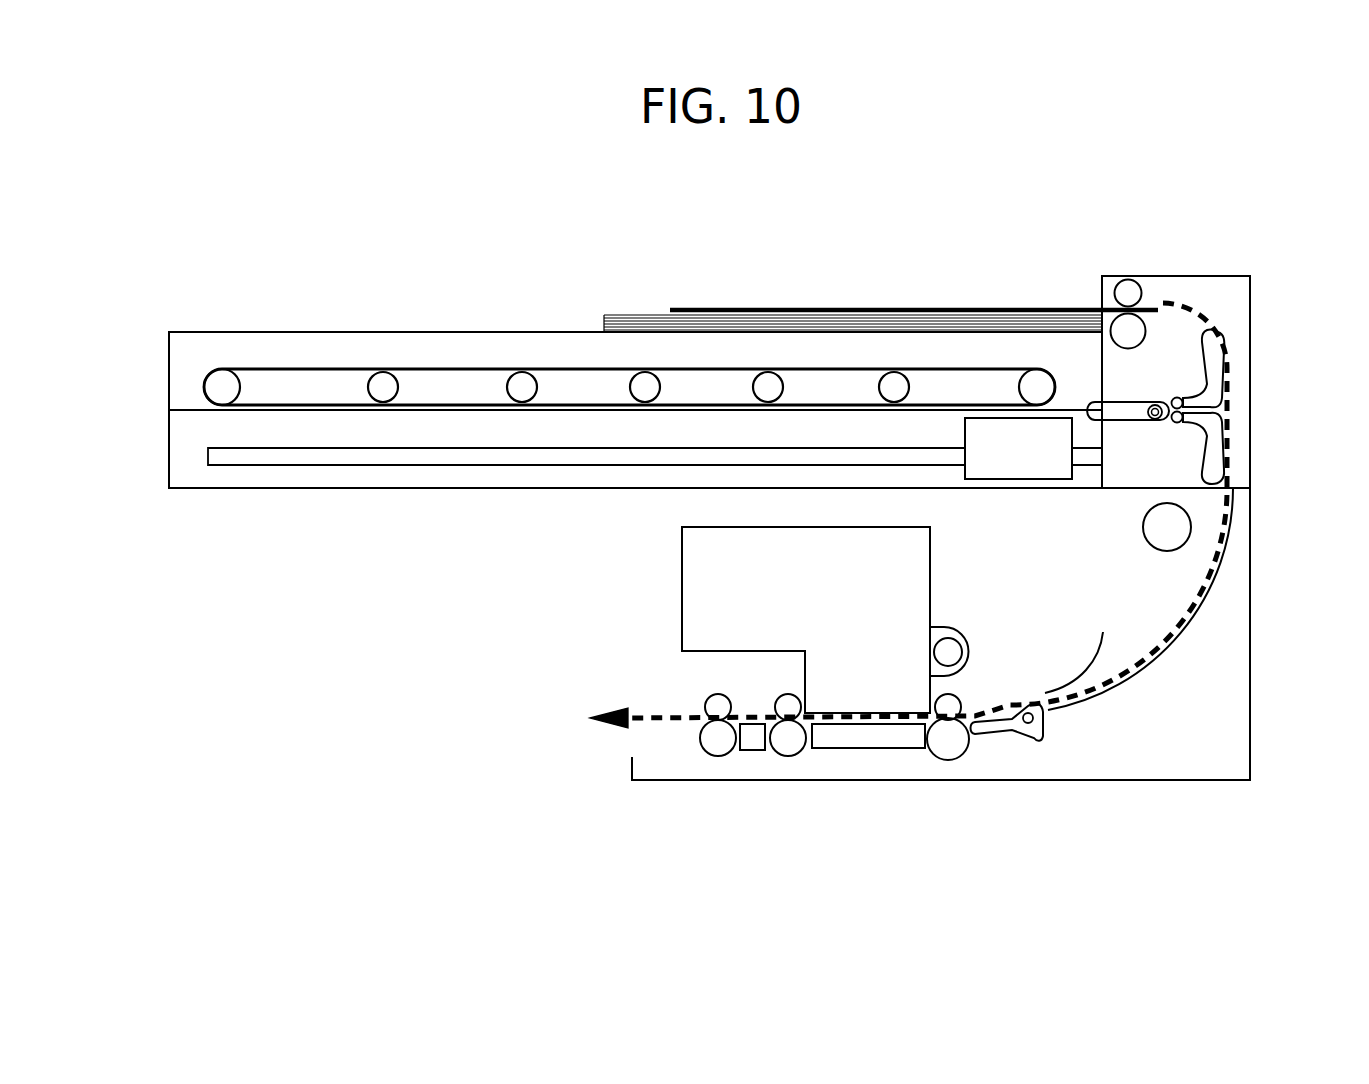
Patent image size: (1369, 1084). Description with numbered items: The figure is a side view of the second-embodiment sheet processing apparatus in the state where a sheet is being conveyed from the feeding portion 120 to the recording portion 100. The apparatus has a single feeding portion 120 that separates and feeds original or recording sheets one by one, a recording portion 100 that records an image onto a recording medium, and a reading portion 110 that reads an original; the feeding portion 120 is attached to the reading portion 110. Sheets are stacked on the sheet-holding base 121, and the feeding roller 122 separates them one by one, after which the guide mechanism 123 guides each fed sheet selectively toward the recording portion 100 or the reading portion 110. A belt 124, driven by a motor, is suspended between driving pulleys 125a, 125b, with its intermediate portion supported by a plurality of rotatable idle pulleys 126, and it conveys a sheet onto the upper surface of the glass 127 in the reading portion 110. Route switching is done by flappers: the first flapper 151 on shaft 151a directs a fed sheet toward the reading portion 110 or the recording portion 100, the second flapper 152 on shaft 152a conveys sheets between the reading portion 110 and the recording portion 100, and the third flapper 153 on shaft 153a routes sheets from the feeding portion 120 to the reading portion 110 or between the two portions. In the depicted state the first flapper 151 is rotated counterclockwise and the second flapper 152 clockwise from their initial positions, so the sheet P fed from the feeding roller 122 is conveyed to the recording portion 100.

The recording portion 100 is at (525, 684).
The reading portion 110 is at (155, 451).
The feeding portion 120 is at (1203, 262).
The sheet-holding base 121 is at (587, 332).
The feeding roller 122 is at (1133, 297).
The guide mechanism 123 is at (1207, 310).
The belt 124 is at (833, 368).
The driving pulley 125a is at (1037, 383).
The driving pulley 125b is at (222, 385).
The idle pulleys 126 is at (382, 390).
The glass 127 is at (449, 410).
The first flapper 151 is at (1210, 353).
The shaft 151a is at (1228, 395).
The second flapper 152 is at (1212, 457).
The shaft 152a is at (1228, 427).
The third flapper 153 is at (1120, 408).
The shaft 153a is at (1152, 420).
The sheet P is at (713, 310).